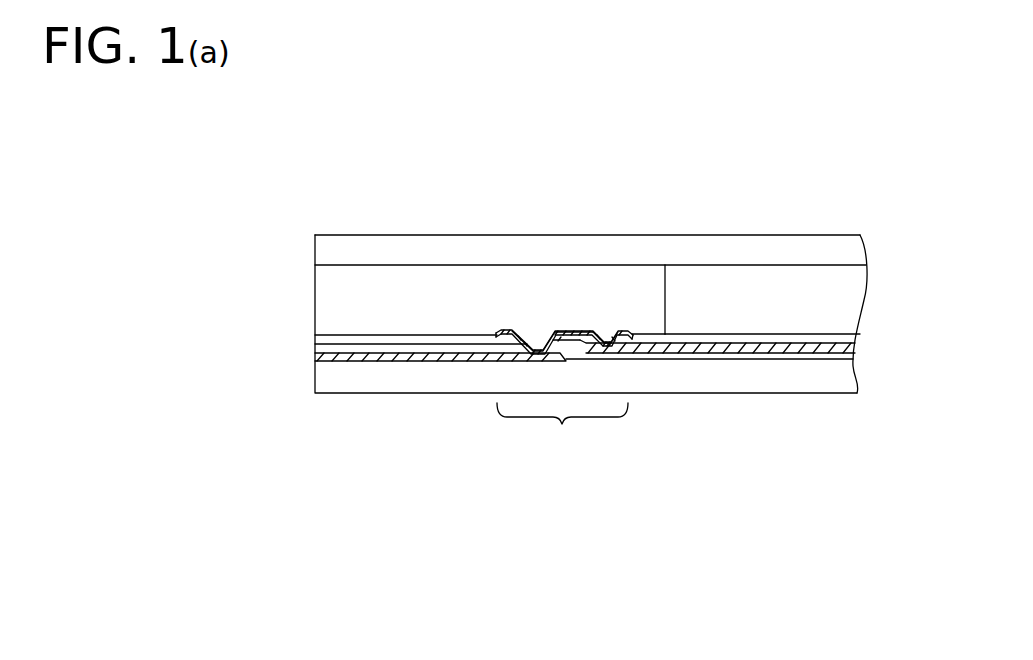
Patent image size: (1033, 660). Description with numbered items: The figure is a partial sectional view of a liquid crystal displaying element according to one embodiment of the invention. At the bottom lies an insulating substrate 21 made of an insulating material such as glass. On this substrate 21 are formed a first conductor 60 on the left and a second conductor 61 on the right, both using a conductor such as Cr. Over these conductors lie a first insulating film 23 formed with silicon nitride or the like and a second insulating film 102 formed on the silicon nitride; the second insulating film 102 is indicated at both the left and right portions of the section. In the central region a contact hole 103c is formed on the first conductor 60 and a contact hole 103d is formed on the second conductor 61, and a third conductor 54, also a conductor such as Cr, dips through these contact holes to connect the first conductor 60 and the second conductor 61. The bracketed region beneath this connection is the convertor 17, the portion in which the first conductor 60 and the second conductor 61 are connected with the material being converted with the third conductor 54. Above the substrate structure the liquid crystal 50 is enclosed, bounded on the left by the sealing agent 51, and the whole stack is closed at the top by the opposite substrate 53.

The opposite substrate 53 is at (350, 247).
The second insulating film 102 is at (417, 338).
The sealing agent 51 is at (498, 290).
The liquid crystal 50 is at (737, 292).
The contact hole 103c is at (535, 327).
The contact hole 103d is at (608, 327).
The third conductor 54 is at (583, 332).
The first conductor 60 is at (353, 355).
The insulating substrate 21 is at (422, 380).
The convertor 17 is at (562, 424).
The second conductor 61 is at (705, 350).
The first insulating film 23 is at (763, 358).